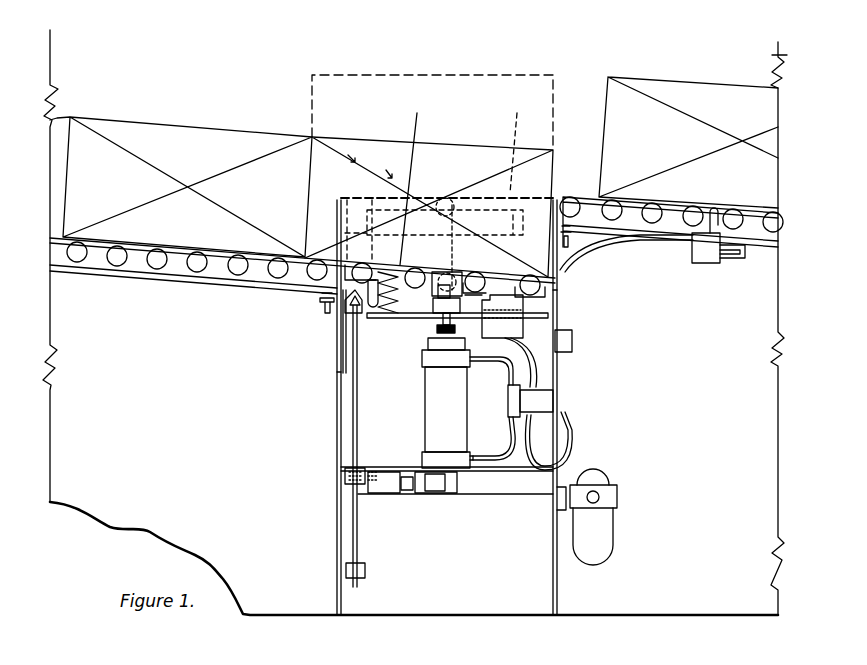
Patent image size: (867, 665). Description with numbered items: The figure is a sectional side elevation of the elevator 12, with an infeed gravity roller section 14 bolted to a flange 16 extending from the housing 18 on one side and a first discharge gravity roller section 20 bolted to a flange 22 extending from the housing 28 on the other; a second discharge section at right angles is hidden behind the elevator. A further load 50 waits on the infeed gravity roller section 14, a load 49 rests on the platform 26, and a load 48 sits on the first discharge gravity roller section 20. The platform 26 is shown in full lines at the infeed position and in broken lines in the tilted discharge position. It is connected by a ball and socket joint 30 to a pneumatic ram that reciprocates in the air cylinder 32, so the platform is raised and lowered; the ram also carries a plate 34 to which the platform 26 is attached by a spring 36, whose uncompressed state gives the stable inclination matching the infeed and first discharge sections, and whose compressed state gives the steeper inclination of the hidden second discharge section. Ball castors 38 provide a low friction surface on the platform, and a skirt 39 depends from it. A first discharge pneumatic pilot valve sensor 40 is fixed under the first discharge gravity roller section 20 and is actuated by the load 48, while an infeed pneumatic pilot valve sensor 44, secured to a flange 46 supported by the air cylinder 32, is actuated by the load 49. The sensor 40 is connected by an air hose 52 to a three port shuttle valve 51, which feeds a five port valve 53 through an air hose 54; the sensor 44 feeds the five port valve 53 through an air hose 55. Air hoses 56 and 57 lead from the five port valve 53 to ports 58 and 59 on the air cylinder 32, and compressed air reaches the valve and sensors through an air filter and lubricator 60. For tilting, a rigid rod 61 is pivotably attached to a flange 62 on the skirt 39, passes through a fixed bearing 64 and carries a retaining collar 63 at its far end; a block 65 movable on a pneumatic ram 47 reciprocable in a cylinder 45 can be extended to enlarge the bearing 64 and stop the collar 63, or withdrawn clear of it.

The elevator 12 is at (330, 429).
The infeed gravity roller section 14 is at (177, 270).
The flange 16 is at (318, 304).
The housing 18 is at (338, 376).
The first discharge gravity roller section 20 is at (657, 233).
The flange 22 is at (579, 248).
The platform 26 is at (464, 179).
The housing 28 is at (443, 322).
The ball and socket joint 30 is at (446, 196).
The air cylinder 32 is at (457, 407).
The plate 34 is at (407, 319).
The spring 36 is at (399, 272).
The ball castors 38 is at (366, 270).
The skirt 39 is at (343, 343).
The first discharge pneumatic pilot valve sensor 40 is at (718, 258).
The infeed pneumatic pilot valve sensor 44 is at (500, 309).
The cylinder 45 is at (437, 488).
The flange 46 is at (471, 349).
The pneumatic ram 47 is at (406, 491).
The load 48 is at (730, 119).
The load 49 is at (392, 167).
The load 50 is at (202, 164).
The three port shuttle valve 51 is at (573, 346).
The air hose 52 is at (601, 246).
The five port valve 53 is at (548, 402).
The air hose 54 is at (571, 432).
The air hose 55 is at (532, 367).
The air hose 56 is at (489, 395).
The air hose 57 is at (513, 432).
The port 58 is at (470, 358).
The port 59 is at (473, 458).
The air filter and lubricator 60 is at (609, 534).
The rigid rod 61 is at (358, 406).
The flange 62 is at (345, 310).
The retaining collar 63 is at (347, 567).
The fixed bearing 64 is at (345, 477).
The block 65 is at (386, 488).